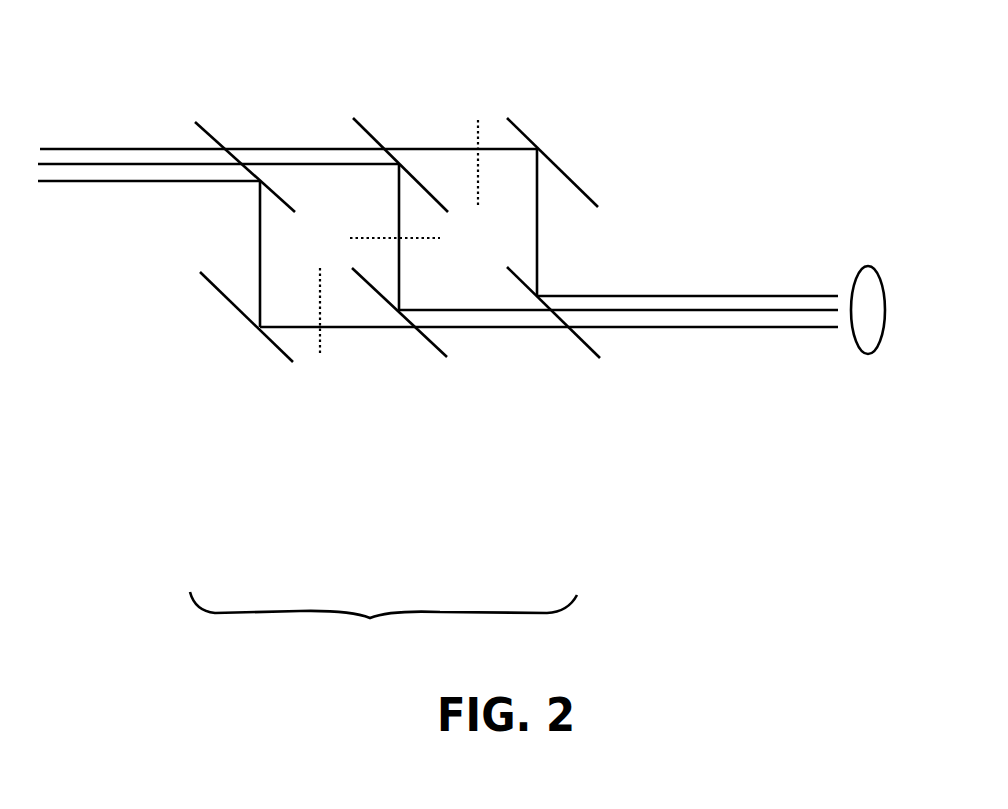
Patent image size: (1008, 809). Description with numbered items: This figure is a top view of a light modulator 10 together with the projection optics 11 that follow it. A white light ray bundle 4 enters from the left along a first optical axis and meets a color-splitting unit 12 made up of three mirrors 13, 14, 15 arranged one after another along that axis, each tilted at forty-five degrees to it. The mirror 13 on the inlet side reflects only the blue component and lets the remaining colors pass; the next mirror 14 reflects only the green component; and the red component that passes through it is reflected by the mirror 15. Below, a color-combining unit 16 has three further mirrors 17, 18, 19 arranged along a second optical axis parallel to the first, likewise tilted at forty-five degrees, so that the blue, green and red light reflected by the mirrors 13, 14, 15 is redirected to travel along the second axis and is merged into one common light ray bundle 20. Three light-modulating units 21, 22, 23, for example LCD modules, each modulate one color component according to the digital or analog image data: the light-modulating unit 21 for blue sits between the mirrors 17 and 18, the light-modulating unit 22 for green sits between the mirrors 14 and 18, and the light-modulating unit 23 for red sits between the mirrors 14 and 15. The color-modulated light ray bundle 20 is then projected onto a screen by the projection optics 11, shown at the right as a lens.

The light ray bundle 4 is at (66, 150).
The light modulator 10 is at (383, 621).
The projection optics 11 is at (870, 354).
The color-splitting unit 12 is at (321, 111).
The mirror 13 is at (214, 137).
The mirror 14 is at (370, 133).
The mirror 15 is at (518, 130).
The color-combining unit 16 is at (399, 400).
The mirror 17 is at (213, 286).
The mirror 18 is at (437, 348).
The mirror 19 is at (583, 343).
The light ray bundle 20 is at (758, 328).
The light-modulating unit 21 is at (318, 348).
The light-modulating unit 22 is at (372, 238).
The light-modulating unit 23 is at (478, 120).